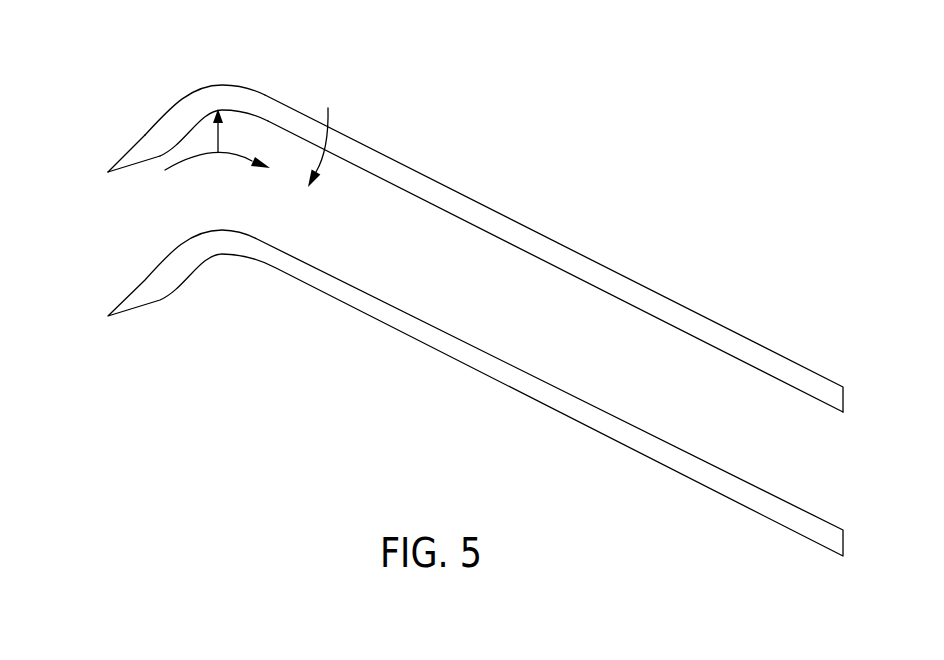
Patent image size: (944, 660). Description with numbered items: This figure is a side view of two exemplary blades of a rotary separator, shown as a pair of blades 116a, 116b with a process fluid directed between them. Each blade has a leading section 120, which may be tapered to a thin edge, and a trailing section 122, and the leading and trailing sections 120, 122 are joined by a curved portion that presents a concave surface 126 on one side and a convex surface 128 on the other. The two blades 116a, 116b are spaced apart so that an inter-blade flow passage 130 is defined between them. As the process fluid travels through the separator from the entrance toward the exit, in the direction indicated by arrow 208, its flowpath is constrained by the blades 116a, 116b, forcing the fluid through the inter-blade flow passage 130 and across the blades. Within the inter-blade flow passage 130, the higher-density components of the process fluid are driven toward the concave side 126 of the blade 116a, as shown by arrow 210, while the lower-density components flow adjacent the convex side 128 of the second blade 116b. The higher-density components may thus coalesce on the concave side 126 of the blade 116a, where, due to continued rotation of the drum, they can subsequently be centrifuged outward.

The blade 116a is at (375, 168).
The second blade 116b is at (337, 293).
The leading section 120 is at (160, 128).
The trailing section 122 is at (442, 198).
The concave surface 126 is at (107, 161).
The convex surface 128 is at (203, 84).
The inter-blade flow passage 130 is at (329, 131).
The arrow 208 is at (205, 155).
The arrow 210 is at (222, 142).